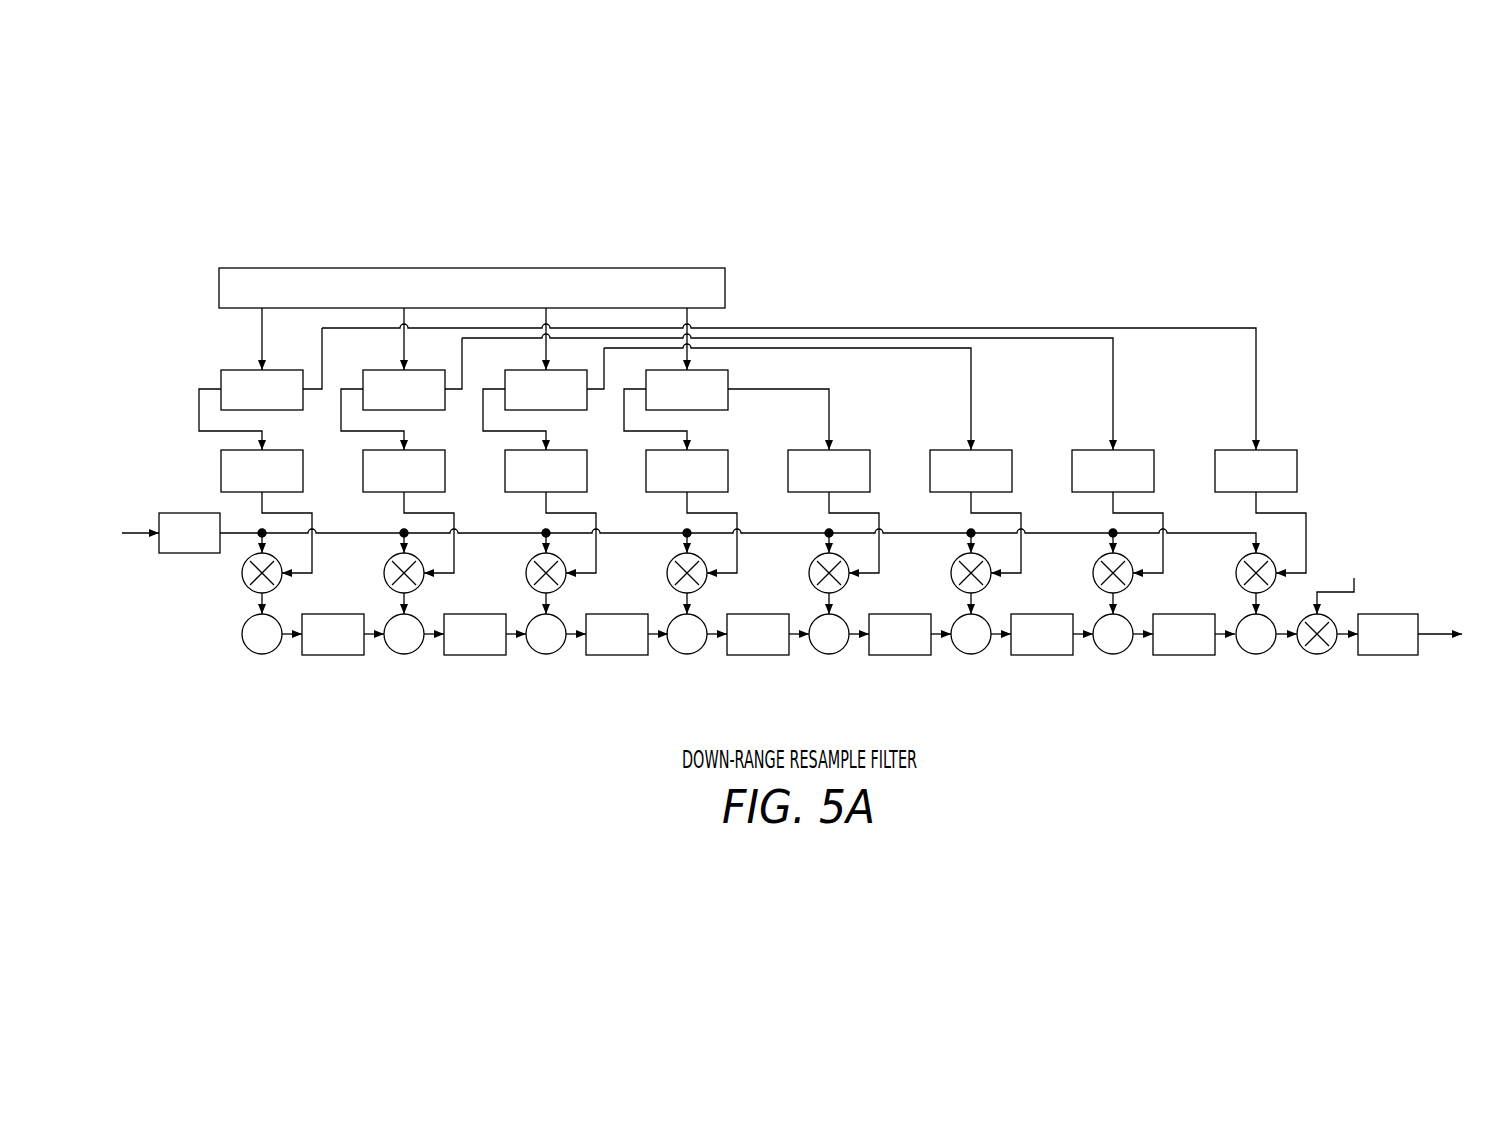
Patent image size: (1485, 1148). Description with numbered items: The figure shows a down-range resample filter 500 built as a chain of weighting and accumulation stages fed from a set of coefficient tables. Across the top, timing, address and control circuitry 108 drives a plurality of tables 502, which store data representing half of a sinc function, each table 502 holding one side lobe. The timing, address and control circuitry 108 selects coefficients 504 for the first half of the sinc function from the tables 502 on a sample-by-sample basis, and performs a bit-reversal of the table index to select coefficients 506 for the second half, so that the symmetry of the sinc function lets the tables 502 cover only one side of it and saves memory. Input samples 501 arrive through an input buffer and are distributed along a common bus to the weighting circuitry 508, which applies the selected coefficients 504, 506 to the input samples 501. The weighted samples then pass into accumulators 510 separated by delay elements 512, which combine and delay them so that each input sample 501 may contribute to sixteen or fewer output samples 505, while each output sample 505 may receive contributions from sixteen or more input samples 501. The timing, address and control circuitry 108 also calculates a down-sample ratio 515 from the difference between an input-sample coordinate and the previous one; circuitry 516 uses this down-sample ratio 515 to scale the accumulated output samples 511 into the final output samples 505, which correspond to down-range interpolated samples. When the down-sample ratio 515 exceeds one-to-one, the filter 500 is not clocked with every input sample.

The down-range resample filter 500 is at (240, 186).
The timing, address and control circuitry 108 is at (705, 268).
The input samples 501 is at (142, 535).
The tables 502 is at (728, 372).
The coefficients 504 is at (308, 438).
The output samples 505 is at (1440, 640).
The coefficients 506 is at (875, 438).
The weighting circuitry 508 is at (276, 587).
The accumulators 510 is at (263, 655).
The output samples 511 is at (1284, 640).
The delay elements 512 is at (332, 656).
The down-sample ratio 515 is at (1359, 553).
The circuitry 516 is at (1318, 655).